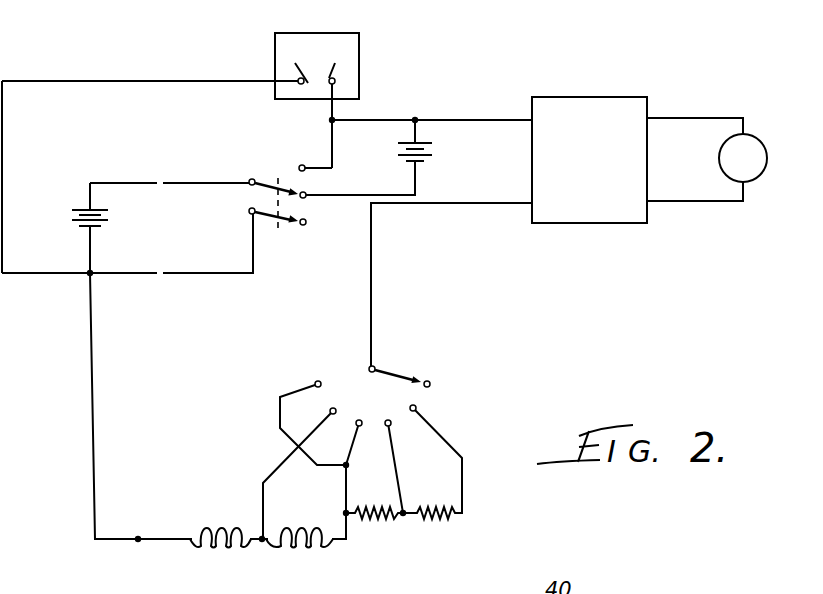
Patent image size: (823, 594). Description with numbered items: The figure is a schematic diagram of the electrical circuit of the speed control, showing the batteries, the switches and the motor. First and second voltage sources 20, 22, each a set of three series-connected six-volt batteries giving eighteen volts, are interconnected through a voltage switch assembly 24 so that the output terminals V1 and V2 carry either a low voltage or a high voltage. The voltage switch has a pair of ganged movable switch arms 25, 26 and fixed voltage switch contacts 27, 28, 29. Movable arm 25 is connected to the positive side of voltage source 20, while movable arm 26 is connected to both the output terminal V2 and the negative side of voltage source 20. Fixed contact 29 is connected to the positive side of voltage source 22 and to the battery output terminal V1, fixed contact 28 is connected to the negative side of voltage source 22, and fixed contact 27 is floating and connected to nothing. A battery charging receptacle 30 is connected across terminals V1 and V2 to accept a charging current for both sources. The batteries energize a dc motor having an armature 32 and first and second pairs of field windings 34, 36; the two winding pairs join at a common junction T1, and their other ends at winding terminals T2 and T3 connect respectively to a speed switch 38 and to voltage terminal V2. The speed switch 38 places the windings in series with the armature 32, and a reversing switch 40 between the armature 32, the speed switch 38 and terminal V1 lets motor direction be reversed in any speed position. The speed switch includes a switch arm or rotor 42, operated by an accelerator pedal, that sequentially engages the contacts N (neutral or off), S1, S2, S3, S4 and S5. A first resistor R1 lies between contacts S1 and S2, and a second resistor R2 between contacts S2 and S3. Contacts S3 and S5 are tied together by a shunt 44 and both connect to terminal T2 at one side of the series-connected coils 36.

The first voltage source 20 is at (72, 215).
The second voltage source 22 is at (438, 150).
The voltage switch assembly 24 is at (314, 213).
The movable switch arm 25 is at (257, 162).
The movable switch arm 26 is at (251, 208).
The fixed voltage switch contact 27 is at (304, 226).
The fixed voltage switch contact 28 is at (307, 194).
The fixed voltage switch contact 29 is at (303, 164).
The battery charging receptacle 30 is at (314, 33).
The armature 32 is at (752, 138).
The first pair of field windings 34 is at (218, 546).
The second pair of field windings 36 is at (326, 547).
The speed switch 38 is at (344, 366).
The reversing switch 40 is at (578, 97).
The speed switch arm 42 is at (391, 374).
The shunt 44 is at (280, 408).
The neutral speed switch contact N is at (432, 383).
The speed switch contact S1 is at (416, 408).
The speed switch contact S2 is at (390, 426).
The speed switch contact S3 is at (361, 426).
The speed switch contact S4 is at (332, 416).
The speed switch contact S5 is at (316, 388).
The first resistor R1 is at (420, 508).
The second resistor R2 is at (362, 511).
The common junction T1 is at (262, 543).
The winding terminal T2 is at (349, 518).
The winding terminal T3 is at (136, 541).
The battery output terminal V1 is at (415, 120).
The battery output terminal V2 is at (88, 273).